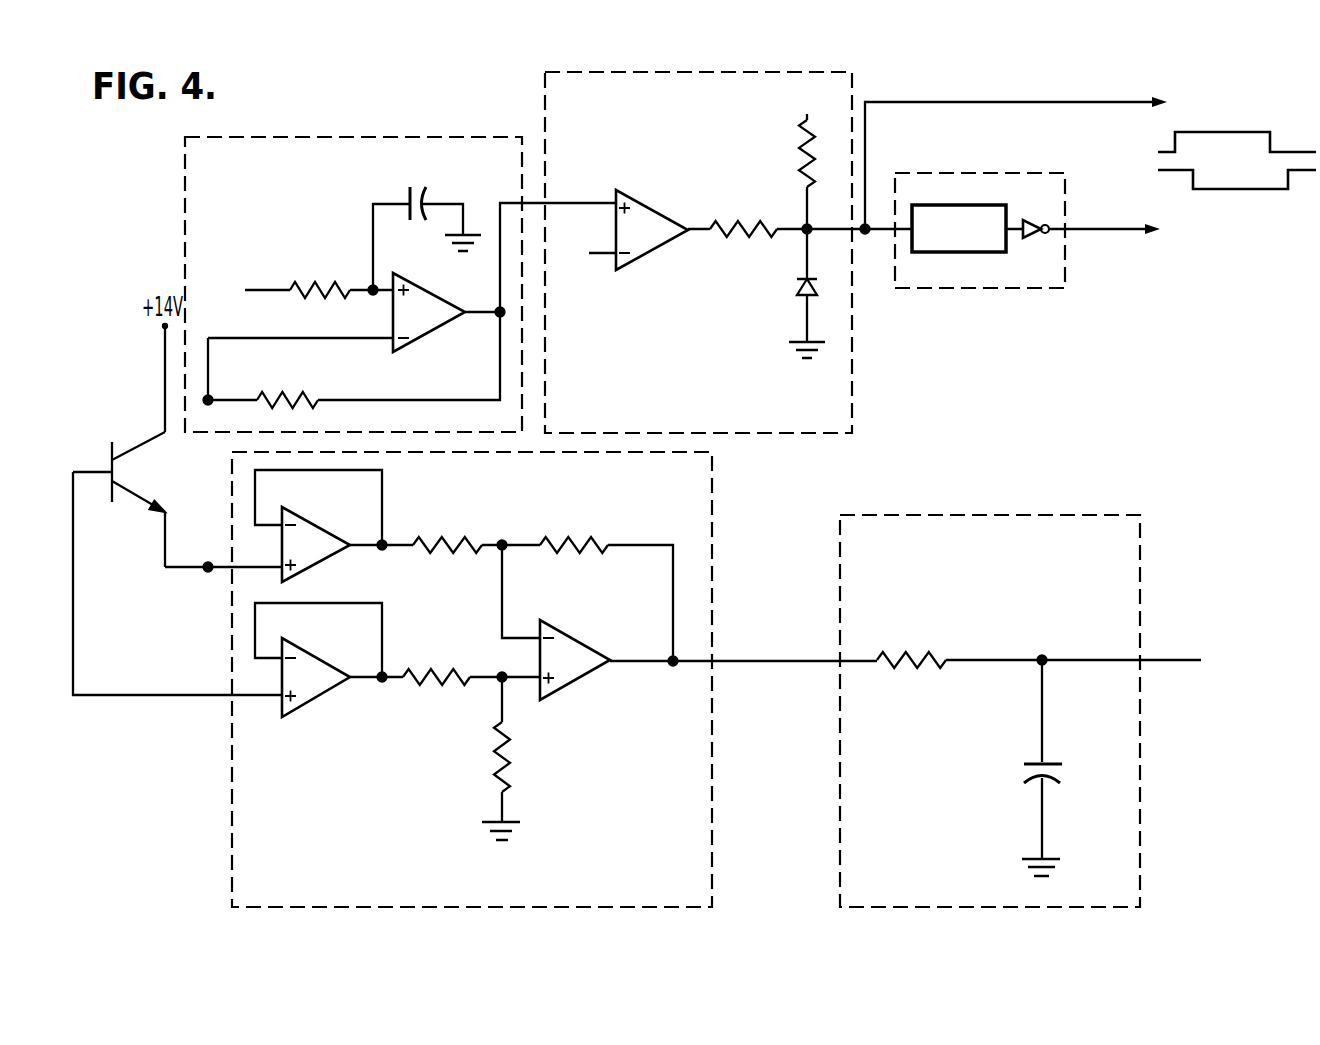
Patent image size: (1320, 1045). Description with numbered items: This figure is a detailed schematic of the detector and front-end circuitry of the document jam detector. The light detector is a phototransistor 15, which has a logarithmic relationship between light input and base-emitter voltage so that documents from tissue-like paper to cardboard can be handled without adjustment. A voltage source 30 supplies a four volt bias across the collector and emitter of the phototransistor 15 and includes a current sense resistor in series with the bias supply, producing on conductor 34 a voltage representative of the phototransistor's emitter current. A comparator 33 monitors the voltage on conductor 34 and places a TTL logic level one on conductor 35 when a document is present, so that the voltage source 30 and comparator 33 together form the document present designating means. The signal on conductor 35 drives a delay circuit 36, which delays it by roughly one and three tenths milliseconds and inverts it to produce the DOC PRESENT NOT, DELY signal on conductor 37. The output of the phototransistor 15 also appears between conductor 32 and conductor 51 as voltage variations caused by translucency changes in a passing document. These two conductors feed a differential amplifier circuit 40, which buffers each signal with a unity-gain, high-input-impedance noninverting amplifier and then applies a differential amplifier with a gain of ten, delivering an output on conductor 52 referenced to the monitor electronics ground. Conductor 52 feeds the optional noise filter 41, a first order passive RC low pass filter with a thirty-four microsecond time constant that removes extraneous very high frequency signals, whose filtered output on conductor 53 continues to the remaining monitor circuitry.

The phototransistor 15 is at (147, 439).
The voltage source 30 is at (337, 135).
The conductor 32 is at (165, 567).
The comparator 33 is at (650, 68).
The conductor 34 is at (530, 203).
The conductor 35 is at (893, 103).
The delay circuit 36 is at (1066, 191).
The conductor 37 is at (1107, 233).
The differential amplifier circuit 40 is at (712, 478).
The noise filter 41 is at (901, 512).
The conductor 51 is at (167, 696).
The conductor 52 is at (784, 660).
The filtered output line to FIG. 5 53 is at (1178, 660).